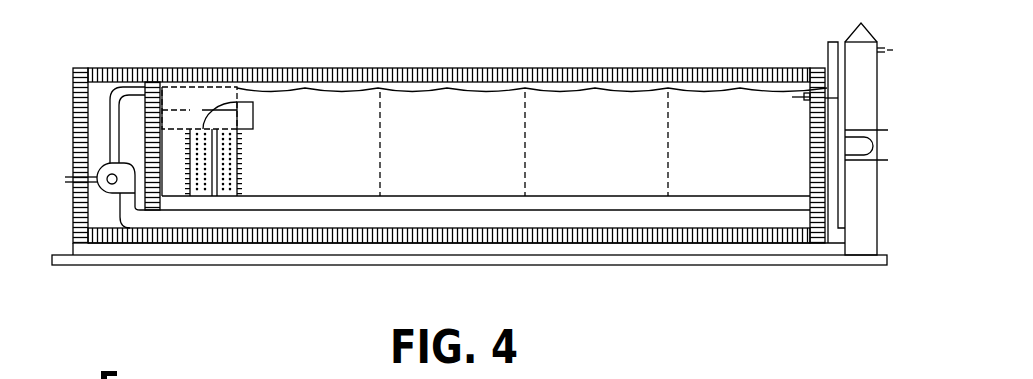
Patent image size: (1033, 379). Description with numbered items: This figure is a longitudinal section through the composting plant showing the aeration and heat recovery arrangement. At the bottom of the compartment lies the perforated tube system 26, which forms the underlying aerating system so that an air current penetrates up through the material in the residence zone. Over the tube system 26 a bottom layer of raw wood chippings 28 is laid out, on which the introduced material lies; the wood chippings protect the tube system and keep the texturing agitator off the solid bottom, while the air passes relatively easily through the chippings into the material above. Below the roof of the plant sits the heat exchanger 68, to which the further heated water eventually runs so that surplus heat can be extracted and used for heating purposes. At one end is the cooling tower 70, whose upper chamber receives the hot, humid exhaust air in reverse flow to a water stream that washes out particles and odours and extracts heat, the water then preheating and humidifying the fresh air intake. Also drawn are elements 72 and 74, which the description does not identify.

The perforated tube system 26 is at (425, 258).
The bottom layer of raw wood chippings 28 is at (467, 202).
The heat exchanger 68 is at (322, 94).
The cooling tower 70 is at (855, 57).
The air inlet 72 is at (65, 178).
The finned duct 74 is at (143, 90).